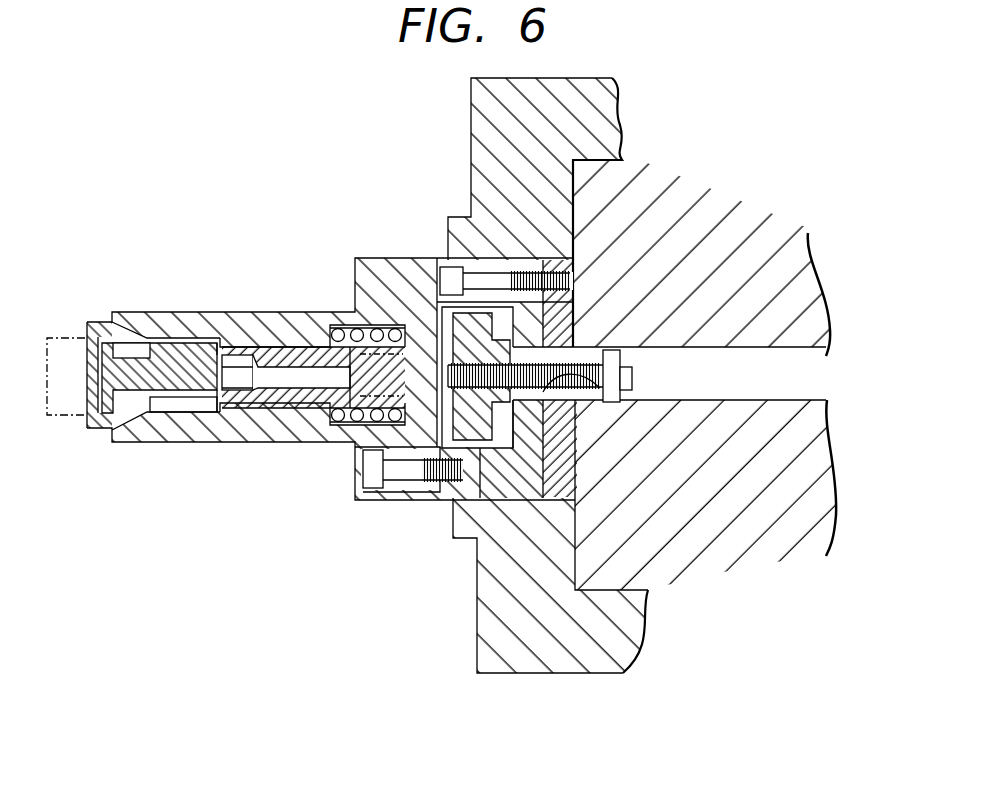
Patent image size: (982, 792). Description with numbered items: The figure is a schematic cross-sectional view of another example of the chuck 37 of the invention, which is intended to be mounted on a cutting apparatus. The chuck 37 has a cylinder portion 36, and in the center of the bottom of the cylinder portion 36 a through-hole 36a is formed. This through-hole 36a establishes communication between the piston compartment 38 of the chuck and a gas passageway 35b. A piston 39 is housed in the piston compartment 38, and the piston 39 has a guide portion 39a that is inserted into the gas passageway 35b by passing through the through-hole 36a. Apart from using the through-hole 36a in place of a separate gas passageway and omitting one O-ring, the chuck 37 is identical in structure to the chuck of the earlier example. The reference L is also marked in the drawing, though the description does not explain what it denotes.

The gas passageway 35b is at (715, 360).
The cylinder portion 36 is at (503, 441).
The through-hole 36a is at (603, 403).
The chuck 37 is at (341, 261).
The piston compartment 38 is at (478, 503).
The piston 39 is at (422, 456).
The guide portion 39a is at (587, 345).
The lens L is at (73, 347).